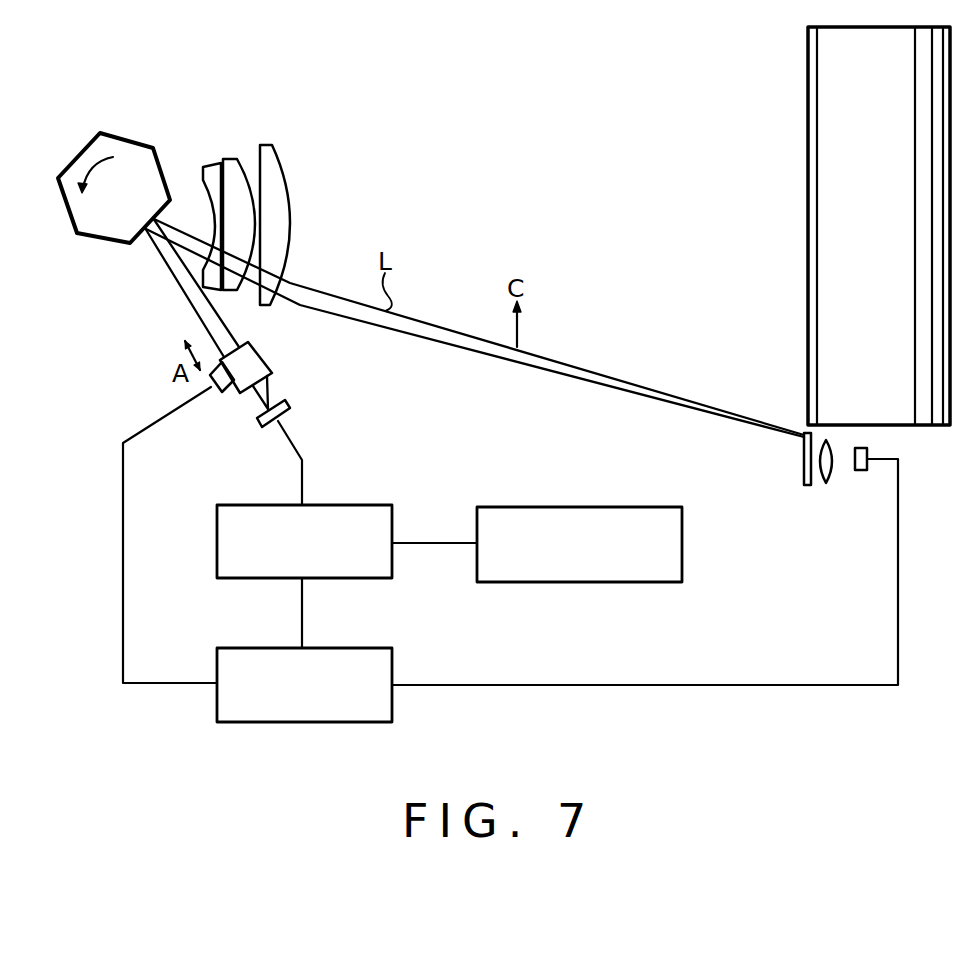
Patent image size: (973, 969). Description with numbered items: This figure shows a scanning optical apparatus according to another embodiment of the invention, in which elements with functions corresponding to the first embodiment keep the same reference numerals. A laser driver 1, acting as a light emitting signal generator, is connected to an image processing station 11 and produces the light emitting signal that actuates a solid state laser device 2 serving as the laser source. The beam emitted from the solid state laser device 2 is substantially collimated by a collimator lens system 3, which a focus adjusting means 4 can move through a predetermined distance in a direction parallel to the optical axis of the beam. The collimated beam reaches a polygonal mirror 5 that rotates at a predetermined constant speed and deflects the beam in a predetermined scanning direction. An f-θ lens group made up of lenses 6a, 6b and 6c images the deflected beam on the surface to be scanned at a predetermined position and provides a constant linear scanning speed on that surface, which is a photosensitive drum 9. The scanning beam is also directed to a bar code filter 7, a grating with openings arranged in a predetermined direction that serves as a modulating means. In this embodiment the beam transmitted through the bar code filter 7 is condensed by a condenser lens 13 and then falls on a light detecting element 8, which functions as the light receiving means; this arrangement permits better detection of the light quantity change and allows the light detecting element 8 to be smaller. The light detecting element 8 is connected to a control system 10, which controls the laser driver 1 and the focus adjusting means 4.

The laser driver 1 is at (355, 505).
The solid state laser device 2 is at (290, 403).
The collimator lens system 3 is at (263, 356).
The focus adjusting means 4 is at (219, 394).
The polygonal mirror 5 is at (95, 240).
The f-θ lens 6a is at (213, 165).
The f-θ lens 6b is at (226, 158).
The f-θ lens 6c is at (272, 146).
The bar code filter 7 is at (804, 478).
The light detecting element 8 is at (860, 472).
The photosensitive drum 9 is at (808, 80).
The control system 10 is at (342, 648).
The image processing station 11 is at (633, 507).
The condenser lens 13 is at (825, 485).